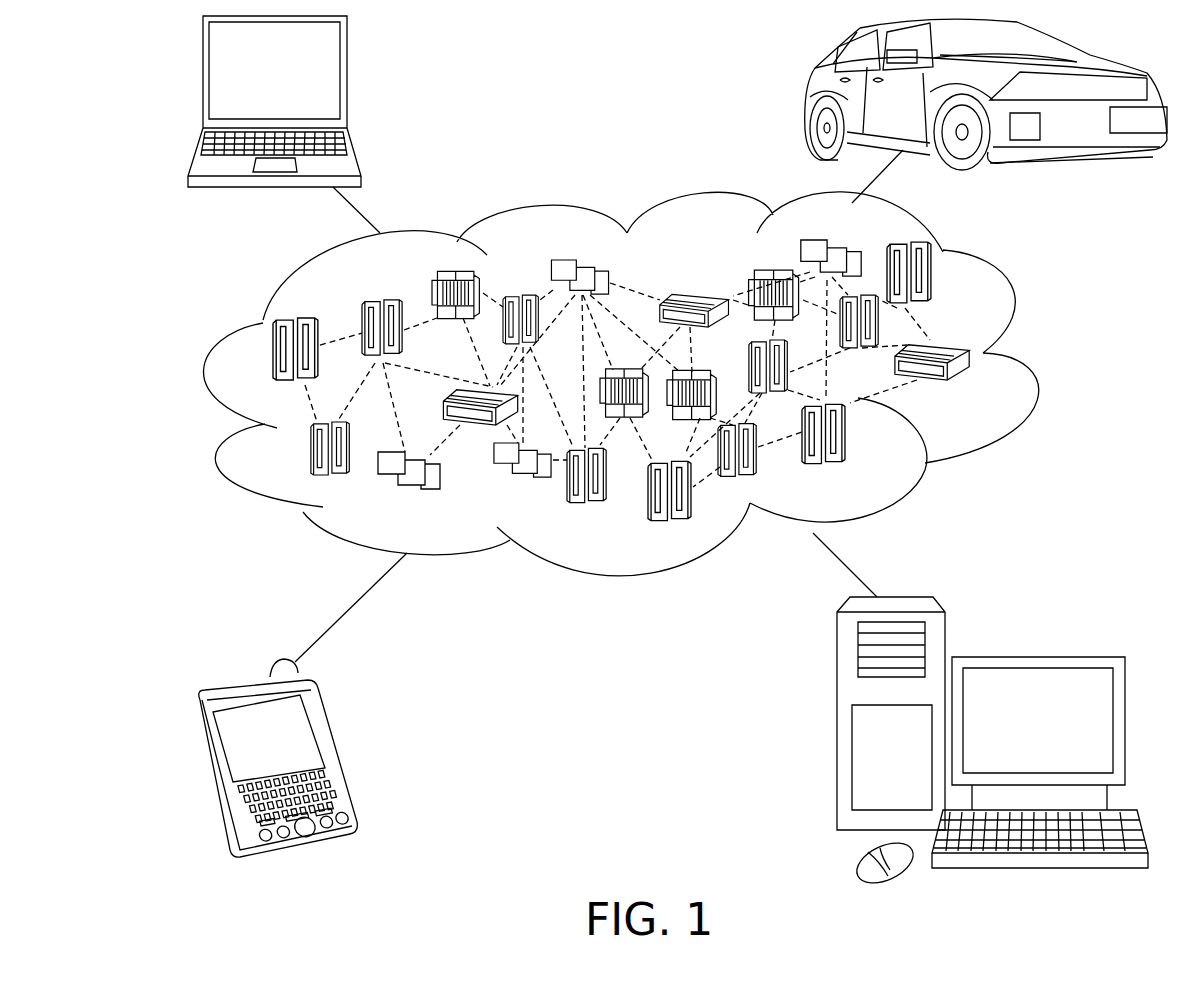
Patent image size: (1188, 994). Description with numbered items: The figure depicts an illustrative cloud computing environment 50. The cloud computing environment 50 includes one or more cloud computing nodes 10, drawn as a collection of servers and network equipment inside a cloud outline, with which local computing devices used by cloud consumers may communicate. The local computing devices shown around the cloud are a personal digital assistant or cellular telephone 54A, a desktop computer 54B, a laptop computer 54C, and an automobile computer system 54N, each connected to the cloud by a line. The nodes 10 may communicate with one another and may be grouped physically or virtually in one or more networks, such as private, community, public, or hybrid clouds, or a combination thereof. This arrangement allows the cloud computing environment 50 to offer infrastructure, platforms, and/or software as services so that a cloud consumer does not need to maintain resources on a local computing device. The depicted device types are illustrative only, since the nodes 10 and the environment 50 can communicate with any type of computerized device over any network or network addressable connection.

The cloud computing node 10 is at (974, 390).
The cloud computing environment 50 is at (1038, 363).
The personal digital assistant or cellular telephone 54A is at (335, 750).
The desktop computer 54B is at (1037, 653).
The laptop computer 54C is at (347, 80).
The automobile computer system 54N is at (808, 97).